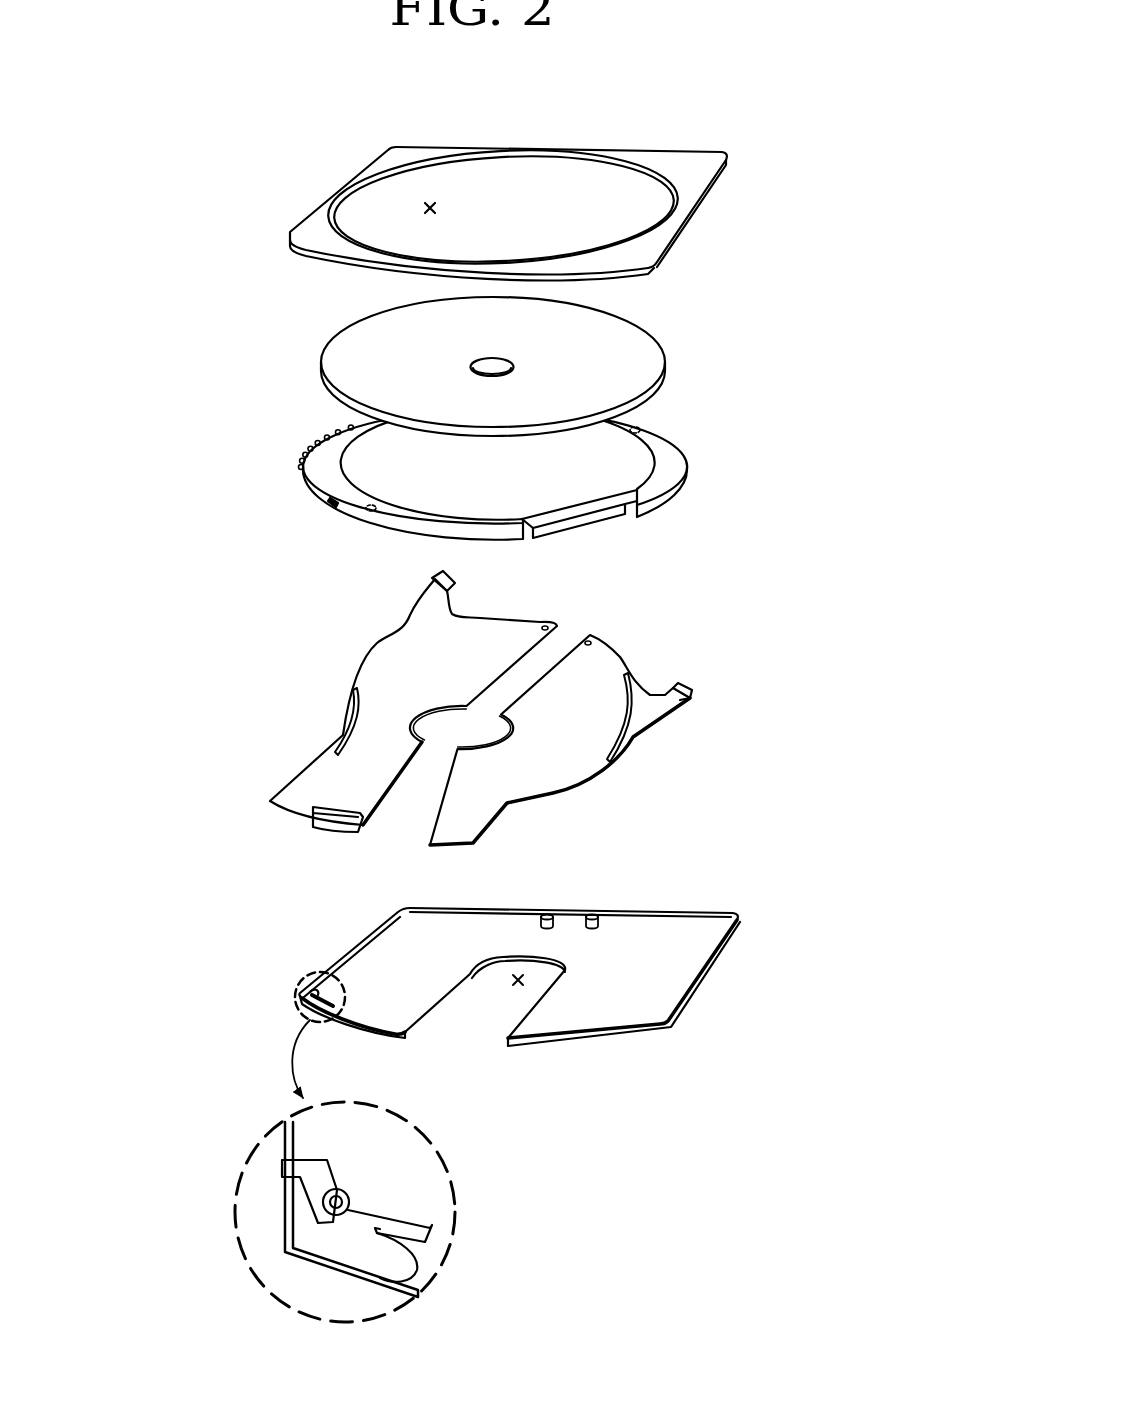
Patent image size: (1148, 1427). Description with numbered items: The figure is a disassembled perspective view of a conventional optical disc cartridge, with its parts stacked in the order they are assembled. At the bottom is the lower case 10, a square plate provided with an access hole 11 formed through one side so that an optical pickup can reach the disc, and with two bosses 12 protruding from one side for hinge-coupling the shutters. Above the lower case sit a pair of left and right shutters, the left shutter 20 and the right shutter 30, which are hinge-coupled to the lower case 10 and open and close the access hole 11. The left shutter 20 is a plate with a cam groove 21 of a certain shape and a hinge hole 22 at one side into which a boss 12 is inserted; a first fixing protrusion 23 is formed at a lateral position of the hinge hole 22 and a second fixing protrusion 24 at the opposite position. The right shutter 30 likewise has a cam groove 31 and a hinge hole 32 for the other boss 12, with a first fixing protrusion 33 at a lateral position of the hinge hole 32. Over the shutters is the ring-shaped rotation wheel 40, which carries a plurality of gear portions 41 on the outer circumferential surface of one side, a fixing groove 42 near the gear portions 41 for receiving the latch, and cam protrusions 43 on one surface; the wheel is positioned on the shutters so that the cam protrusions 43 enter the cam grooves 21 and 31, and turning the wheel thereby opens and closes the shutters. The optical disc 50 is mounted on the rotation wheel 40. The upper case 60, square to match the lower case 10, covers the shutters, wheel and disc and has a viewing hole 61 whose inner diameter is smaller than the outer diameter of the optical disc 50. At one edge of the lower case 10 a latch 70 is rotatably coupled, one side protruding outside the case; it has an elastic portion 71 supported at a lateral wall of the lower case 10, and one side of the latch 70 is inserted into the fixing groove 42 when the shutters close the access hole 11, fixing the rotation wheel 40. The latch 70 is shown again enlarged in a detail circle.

The lower case 10 is at (718, 980).
The access hole 11 is at (521, 988).
The bosses 12 is at (594, 914).
The left shutter 20 is at (381, 637).
The cam groove 21 is at (350, 703).
The hinge hole 22 is at (546, 625).
The first fixing protrusion 23 is at (432, 577).
The second fixing protrusion 24 is at (330, 810).
The right shutter 30 is at (636, 767).
The cam groove 31 is at (650, 722).
The hinge hole 32 is at (589, 640).
The first fixing protrusion 33 is at (683, 685).
The rotation wheel 40 is at (693, 467).
The gear portions 41 is at (313, 441).
The fixing groove 42 is at (330, 500).
The cam protrusions 43 is at (642, 432).
The optical disc 50 is at (670, 360).
The upper case 60 is at (697, 222).
The viewing hole 61 is at (430, 203).
The latch 70 is at (297, 997).
The elastic portion 71 is at (443, 1265).